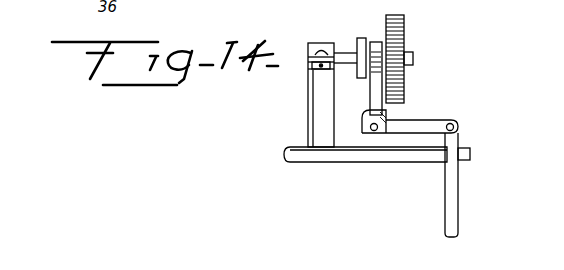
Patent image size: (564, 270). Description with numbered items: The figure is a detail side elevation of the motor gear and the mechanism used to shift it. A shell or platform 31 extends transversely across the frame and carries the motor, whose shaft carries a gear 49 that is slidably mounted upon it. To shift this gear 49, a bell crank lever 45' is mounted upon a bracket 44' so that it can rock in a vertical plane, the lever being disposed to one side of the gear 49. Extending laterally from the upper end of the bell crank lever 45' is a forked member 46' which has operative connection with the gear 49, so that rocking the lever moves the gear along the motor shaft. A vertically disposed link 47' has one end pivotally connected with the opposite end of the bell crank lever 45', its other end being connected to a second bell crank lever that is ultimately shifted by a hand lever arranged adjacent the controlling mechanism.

The shell or platform 31 is at (305, 157).
The bracket 44' is at (366, 119).
The bell crank lever 45' is at (417, 114).
The forked member 46' is at (357, 40).
The vertically disposed link 47' is at (477, 185).
The gear 49 is at (407, 27).